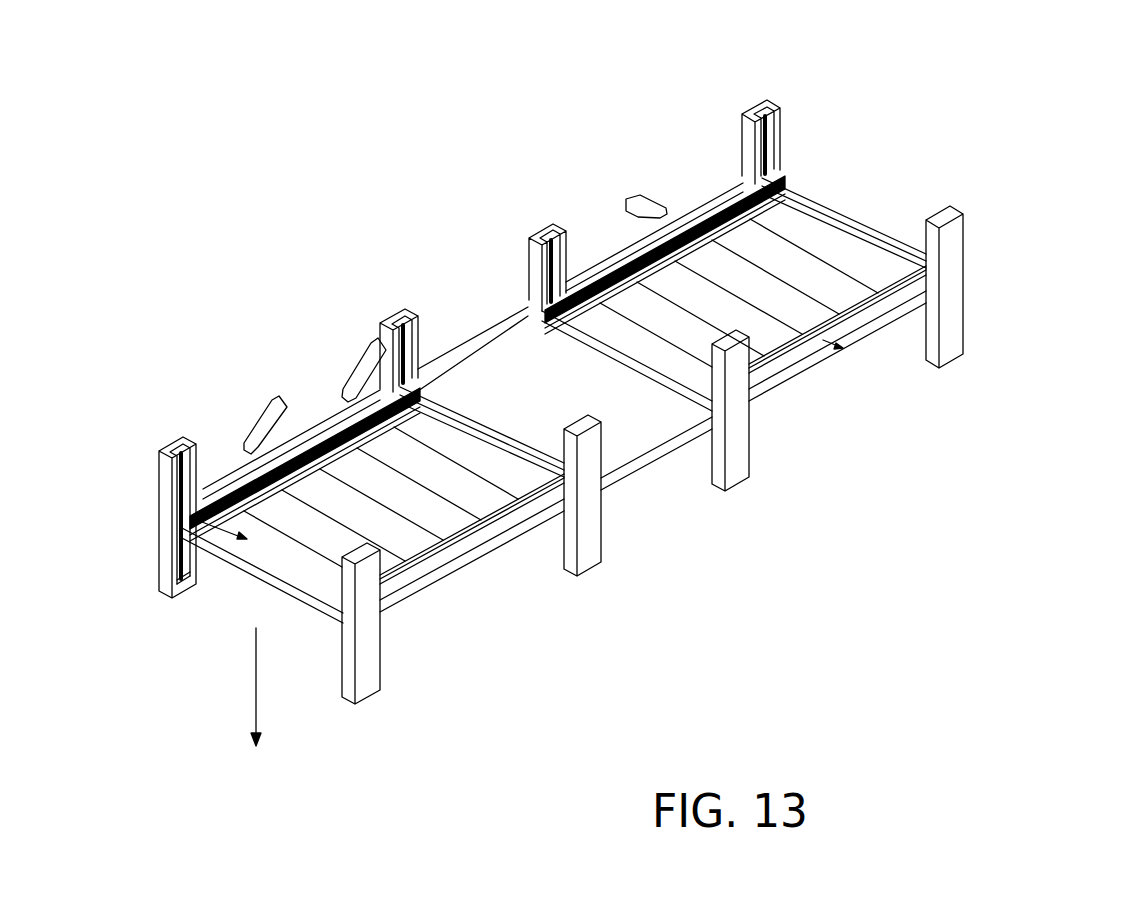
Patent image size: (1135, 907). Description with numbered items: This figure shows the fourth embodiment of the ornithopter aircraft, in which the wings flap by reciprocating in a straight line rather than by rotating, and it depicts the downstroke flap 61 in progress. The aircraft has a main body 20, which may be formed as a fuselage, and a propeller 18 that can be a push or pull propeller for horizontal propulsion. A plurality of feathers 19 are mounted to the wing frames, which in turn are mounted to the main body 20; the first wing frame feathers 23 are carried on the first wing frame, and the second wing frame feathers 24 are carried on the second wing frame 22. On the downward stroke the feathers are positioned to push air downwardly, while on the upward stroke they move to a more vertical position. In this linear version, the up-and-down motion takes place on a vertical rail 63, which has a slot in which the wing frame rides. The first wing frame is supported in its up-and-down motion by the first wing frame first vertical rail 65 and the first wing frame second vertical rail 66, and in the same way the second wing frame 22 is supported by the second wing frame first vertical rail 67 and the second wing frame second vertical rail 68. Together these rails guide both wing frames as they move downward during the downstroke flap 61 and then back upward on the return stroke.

The propeller 18 is at (353, 359).
The feathers 19 is at (192, 506).
The main body 20 is at (493, 346).
The second wing frame 22 is at (240, 475).
The first wing frame feathers 23 is at (828, 243).
The second wing frame feathers 24 is at (440, 519).
The downstroke flap 61 is at (243, 668).
The vertical rail 63 is at (190, 572).
The first wing frame first vertical rail 65 is at (784, 122).
The first wing frame second vertical rail 66 is at (528, 268).
The second wing frame first vertical rail 67 is at (400, 308).
The second wing frame second vertical rail 68 is at (186, 443).